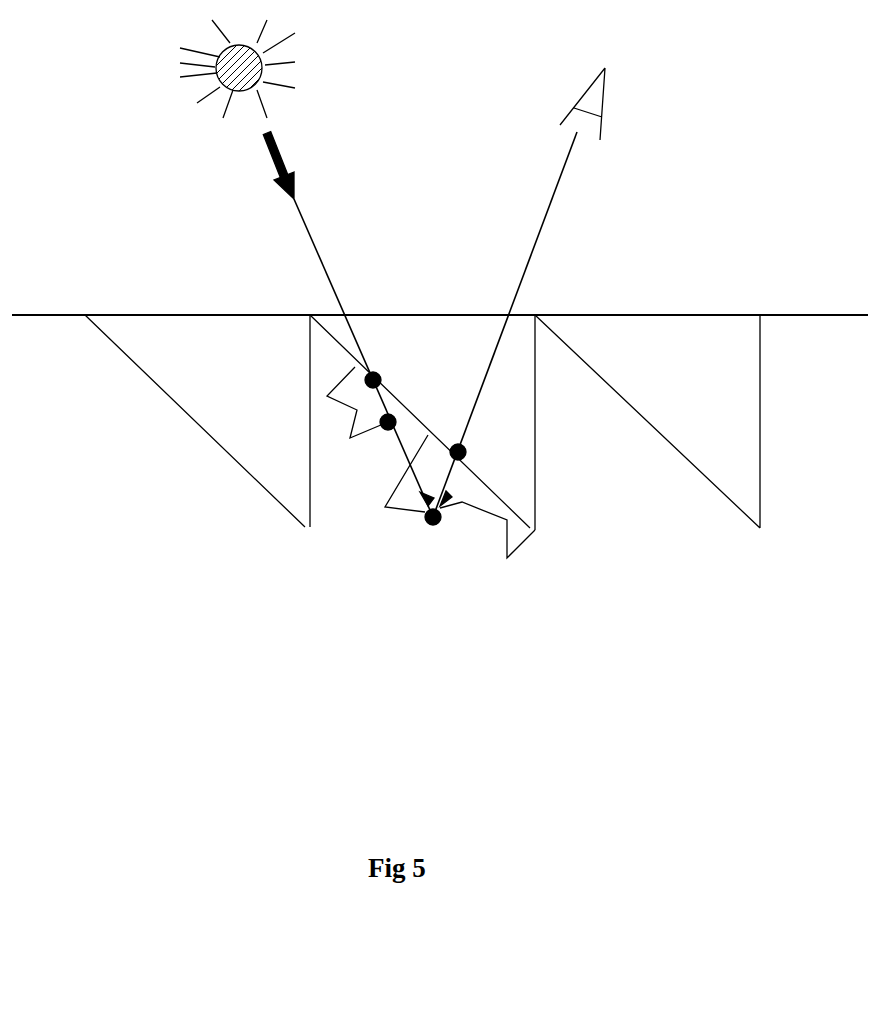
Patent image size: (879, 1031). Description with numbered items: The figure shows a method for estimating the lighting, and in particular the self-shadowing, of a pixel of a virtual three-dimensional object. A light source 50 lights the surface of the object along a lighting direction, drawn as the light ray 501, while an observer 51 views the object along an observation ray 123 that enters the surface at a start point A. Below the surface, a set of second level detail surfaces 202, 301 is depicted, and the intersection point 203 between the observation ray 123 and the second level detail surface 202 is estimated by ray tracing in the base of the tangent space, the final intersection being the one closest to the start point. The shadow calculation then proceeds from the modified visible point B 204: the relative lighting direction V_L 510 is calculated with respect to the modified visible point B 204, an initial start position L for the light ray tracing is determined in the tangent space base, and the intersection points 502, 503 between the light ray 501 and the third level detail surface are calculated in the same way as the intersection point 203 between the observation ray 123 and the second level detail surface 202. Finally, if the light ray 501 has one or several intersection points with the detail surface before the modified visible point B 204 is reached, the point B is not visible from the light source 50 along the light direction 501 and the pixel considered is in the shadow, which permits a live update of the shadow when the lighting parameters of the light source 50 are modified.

The light source 50 is at (213, 66).
The observer eye 51 is at (607, 83).
The relative lighting direction V_L 510 is at (267, 152).
The light ray 501 is at (310, 238).
The intersection point 502 is at (375, 373).
The observation ray 123 is at (552, 200).
The second level detail surface 301 is at (334, 399).
The intersection point 503 is at (385, 430).
The intersection point 203 is at (464, 449).
The second level detail surface 202 is at (535, 478).
The modified visible point B 204 is at (428, 525).